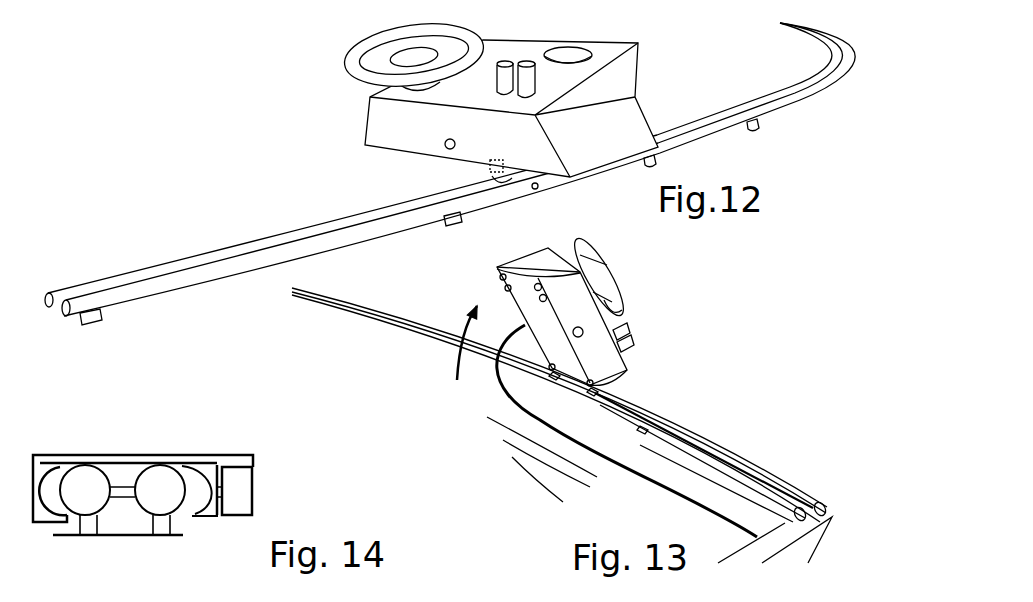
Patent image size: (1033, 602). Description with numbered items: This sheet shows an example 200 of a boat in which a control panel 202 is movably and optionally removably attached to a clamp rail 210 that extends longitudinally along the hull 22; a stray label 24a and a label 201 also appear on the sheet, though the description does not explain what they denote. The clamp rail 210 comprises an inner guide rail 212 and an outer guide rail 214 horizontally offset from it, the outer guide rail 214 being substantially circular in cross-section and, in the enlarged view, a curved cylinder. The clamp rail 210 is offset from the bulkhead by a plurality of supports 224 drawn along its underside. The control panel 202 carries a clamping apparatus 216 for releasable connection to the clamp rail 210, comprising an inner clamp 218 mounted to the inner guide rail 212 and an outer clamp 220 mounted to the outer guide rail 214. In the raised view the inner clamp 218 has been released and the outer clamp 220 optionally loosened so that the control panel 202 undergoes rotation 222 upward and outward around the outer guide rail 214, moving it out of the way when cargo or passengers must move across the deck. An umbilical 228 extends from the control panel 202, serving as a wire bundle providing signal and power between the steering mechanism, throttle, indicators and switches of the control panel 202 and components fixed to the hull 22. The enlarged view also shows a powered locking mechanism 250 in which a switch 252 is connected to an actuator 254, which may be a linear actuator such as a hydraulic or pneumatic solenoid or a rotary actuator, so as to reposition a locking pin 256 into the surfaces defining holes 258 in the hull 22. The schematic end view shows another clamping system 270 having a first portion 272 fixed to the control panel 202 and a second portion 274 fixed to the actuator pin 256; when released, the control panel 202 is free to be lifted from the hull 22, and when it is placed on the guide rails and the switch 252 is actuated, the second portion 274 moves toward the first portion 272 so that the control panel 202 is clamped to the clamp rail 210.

In FIG. 12, the vehicle component 24a is at (255, 7).
In FIG. 13, the hull 22 is at (413, 335).
In FIG. 12, the example 200 is at (243, 223).
In FIG. 13, the example 200 is at (358, 335).
In FIG. 14, the vehicle surface 201 is at (115, 525).
In FIG. 12, the control panel 202 is at (640, 52).
In FIG. 13, the control panel 202 is at (602, 310).
In FIG. 14, the control panel 202 is at (185, 458).
In FIG. 12, the clamp rail 210 is at (202, 292).
In FIG. 13, the clamp rail 210 is at (690, 408).
In FIG. 12, the inner guide rail 212 is at (143, 273).
In FIG. 12, the outer guide rail 214 is at (278, 253).
In FIG. 12, the clamping apparatus 216 is at (586, 190).
In FIG. 13, the clamping apparatus 216 is at (437, 313).
In FIG. 13, the inner clamp 218 is at (505, 288).
In FIG. 13, the outer clamp 220 is at (500, 276).
In FIG. 13, the rotation 222 is at (457, 357).
In FIG. 12, the supports 224 is at (105, 326).
In FIG. 13, the umbilical 228 is at (684, 496).
In FIG. 12, the powered locking mechanism 250 is at (405, 177).
In FIG. 12, the switch 252 is at (443, 145).
In FIG. 13, the switch 252 is at (585, 332).
In FIG. 12, the actuator 254 is at (492, 160).
In FIG. 14, the actuator 254 is at (240, 494).
In FIG. 12, the locking pin 256 is at (488, 183).
In FIG. 14, the locking pin 256 is at (217, 505).
In FIG. 12, the holes 258 is at (535, 188).
In FIG. 14, the clamping system 270 is at (56, 448).
In FIG. 14, the first portion 272 is at (44, 490).
In FIG. 14, the second portion 274 is at (205, 507).